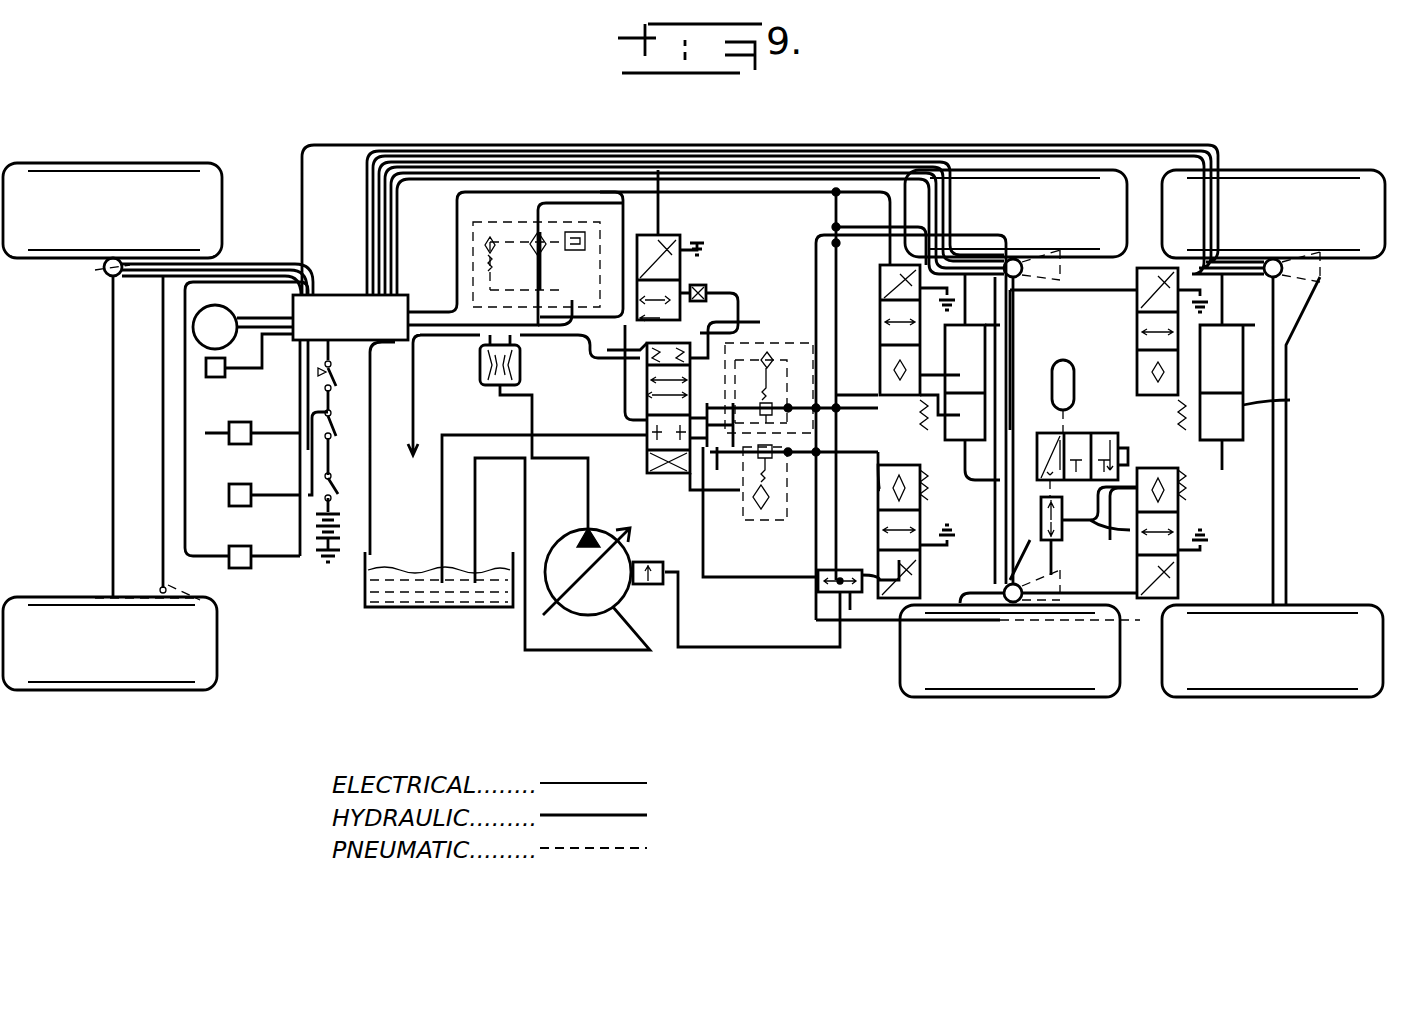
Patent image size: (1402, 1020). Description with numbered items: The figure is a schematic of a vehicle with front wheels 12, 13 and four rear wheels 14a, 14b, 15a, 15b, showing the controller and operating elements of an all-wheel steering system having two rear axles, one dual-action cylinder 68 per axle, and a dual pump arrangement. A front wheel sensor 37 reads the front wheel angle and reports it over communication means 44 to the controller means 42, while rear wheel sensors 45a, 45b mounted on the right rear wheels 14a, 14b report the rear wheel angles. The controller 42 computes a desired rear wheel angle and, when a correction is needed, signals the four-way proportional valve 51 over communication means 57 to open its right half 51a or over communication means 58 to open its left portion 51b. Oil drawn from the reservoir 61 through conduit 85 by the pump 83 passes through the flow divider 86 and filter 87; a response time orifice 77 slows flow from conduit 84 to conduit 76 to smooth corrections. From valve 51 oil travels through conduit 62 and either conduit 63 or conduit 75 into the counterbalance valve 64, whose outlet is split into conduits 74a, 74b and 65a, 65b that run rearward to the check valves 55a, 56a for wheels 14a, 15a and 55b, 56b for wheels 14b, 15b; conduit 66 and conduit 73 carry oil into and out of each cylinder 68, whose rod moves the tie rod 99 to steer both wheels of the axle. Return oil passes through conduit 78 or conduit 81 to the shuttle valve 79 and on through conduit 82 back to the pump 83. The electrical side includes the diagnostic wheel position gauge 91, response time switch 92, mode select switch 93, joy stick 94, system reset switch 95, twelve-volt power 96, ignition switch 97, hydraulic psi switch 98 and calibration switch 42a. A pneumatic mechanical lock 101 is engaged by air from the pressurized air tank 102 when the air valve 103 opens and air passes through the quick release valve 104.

The front wheel 12 is at (107, 172).
The front wheel 13 is at (118, 690).
The rear wheel 14a is at (1045, 178).
The rear wheel 14b is at (1283, 178).
The rear wheel 15a is at (1020, 690).
The rear wheel 15b is at (1277, 688).
The front wheel sensor 37 is at (103, 275).
The controller means 42 is at (362, 276).
The calibration switch 42a is at (215, 377).
The communication means 44 is at (235, 262).
The rear wheel sensor 45a is at (1050, 295).
The rear wheel sensor 45b is at (1290, 280).
The four-way proportional valve 51 is at (647, 392).
The right half of four-way valve 51a is at (745, 345).
The left portion of four-way valve 51b is at (620, 560).
The check valve 55a is at (880, 290).
The check valve 55b is at (1137, 272).
The check valve 56a is at (920, 520).
The check valve 56b is at (1178, 585).
The communication means 57 is at (445, 300).
The communication means 58 is at (468, 335).
The reservoir 61 is at (440, 610).
The conduit 62 is at (500, 420).
The conduit 63 is at (722, 560).
The counterbalance valve 64 is at (790, 343).
The conduit 65a is at (862, 440).
The conduit 65b is at (950, 635).
The conduit 66 is at (960, 472).
The dual-action cylinder 68 is at (1144, 453).
The conduit 73 is at (1061, 450).
The conduit 74a is at (860, 435).
The conduit 74b is at (813, 250).
The conduit 75 is at (705, 392).
The conduit 76 is at (735, 305).
The response time orifice 77 is at (662, 232).
The conduit 78 is at (760, 590).
The shuttle valve 79 is at (850, 610).
The conduit 81 is at (848, 570).
The conduit 82 is at (800, 650).
The pump 83 is at (576, 525).
The conduit 84 is at (585, 203).
The conduit 85 is at (590, 650).
The flow divider 86 is at (522, 365).
The filter 87 is at (508, 232).
The diagnostic wheel position gauge 91 is at (228, 310).
The response time switch 92 is at (240, 570).
The mode select switch 93 is at (240, 508).
The joy stick 94 is at (240, 446).
The system reset switch 95 is at (320, 495).
The 12-volt power 96 is at (345, 530).
The ignition switch 97 is at (350, 426).
The hydraulic psi switch 98 is at (350, 370).
The tie rod 99 is at (1060, 560).
The mechanical lock 101 is at (1022, 598).
The pressurized air tank 102 is at (1066, 358).
The air valve 103 is at (1085, 430).
The quick release valve 104 is at (1062, 515).